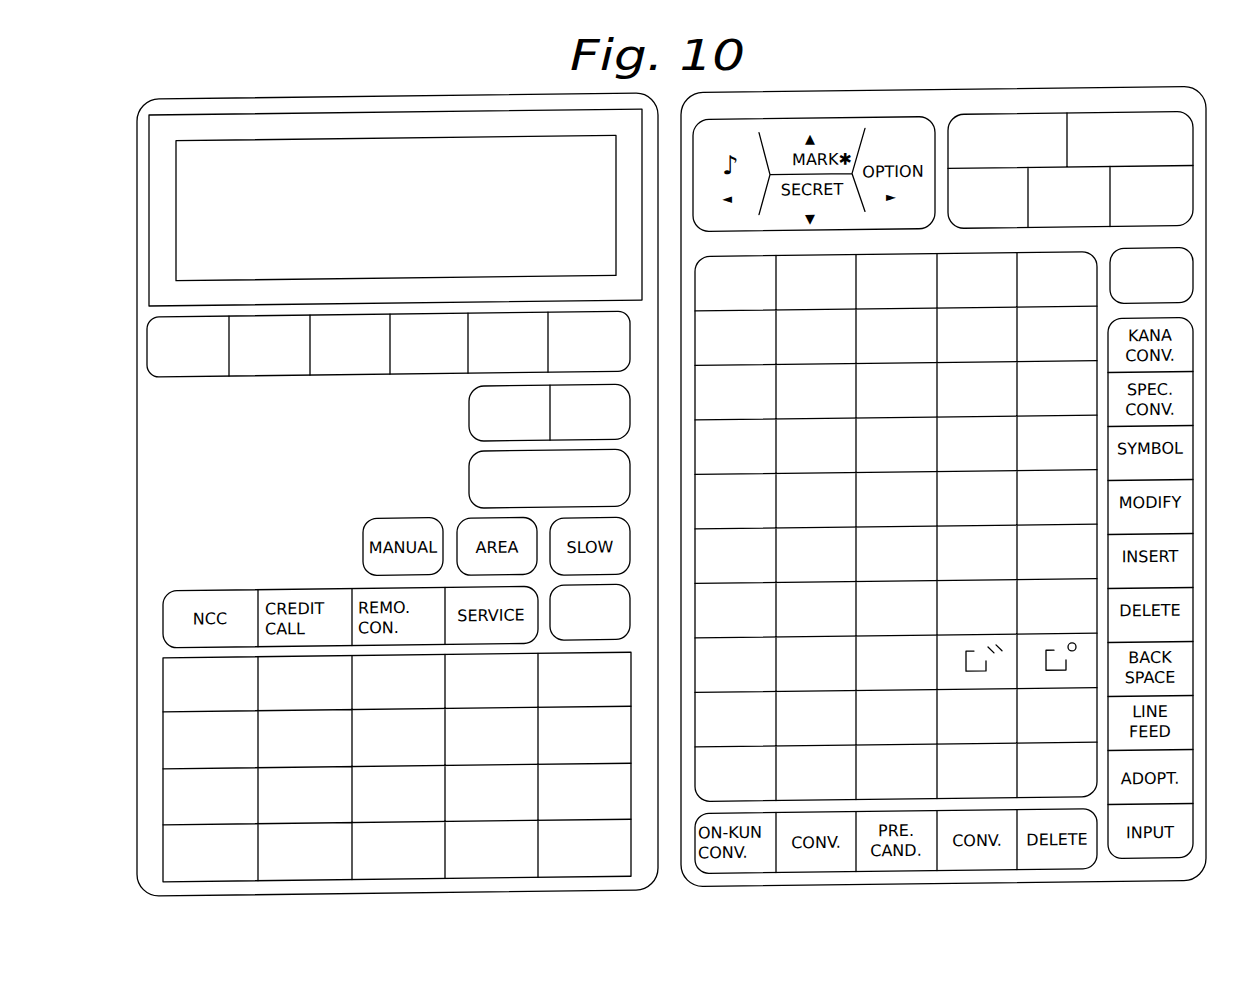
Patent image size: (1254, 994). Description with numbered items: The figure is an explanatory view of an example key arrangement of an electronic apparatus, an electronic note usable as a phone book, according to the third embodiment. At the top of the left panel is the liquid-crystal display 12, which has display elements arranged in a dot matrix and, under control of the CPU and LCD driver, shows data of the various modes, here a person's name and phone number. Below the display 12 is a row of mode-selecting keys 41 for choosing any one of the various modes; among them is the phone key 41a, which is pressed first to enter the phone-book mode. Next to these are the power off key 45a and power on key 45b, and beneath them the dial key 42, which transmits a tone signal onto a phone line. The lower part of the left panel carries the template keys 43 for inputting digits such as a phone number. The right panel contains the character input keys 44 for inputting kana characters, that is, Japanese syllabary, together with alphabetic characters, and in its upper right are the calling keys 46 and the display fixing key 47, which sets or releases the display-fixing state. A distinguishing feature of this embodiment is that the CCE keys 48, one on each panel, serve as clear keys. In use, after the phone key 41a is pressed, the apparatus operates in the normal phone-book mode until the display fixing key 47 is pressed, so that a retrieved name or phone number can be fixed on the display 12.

The liquid-crystal display 12 is at (176, 205).
The mode-selecting keys 41 is at (388, 389).
The phone key 41a is at (355, 376).
The dial key 42 is at (469, 478).
The template keys 43 is at (157, 793).
The character input keys 44 is at (699, 789).
The power off key 45a is at (469, 401).
The power on key 45b is at (552, 436).
The calling keys 46 is at (1062, 132).
The display fixing key 47 is at (1060, 180).
The CCE keys 48 is at (629, 626).